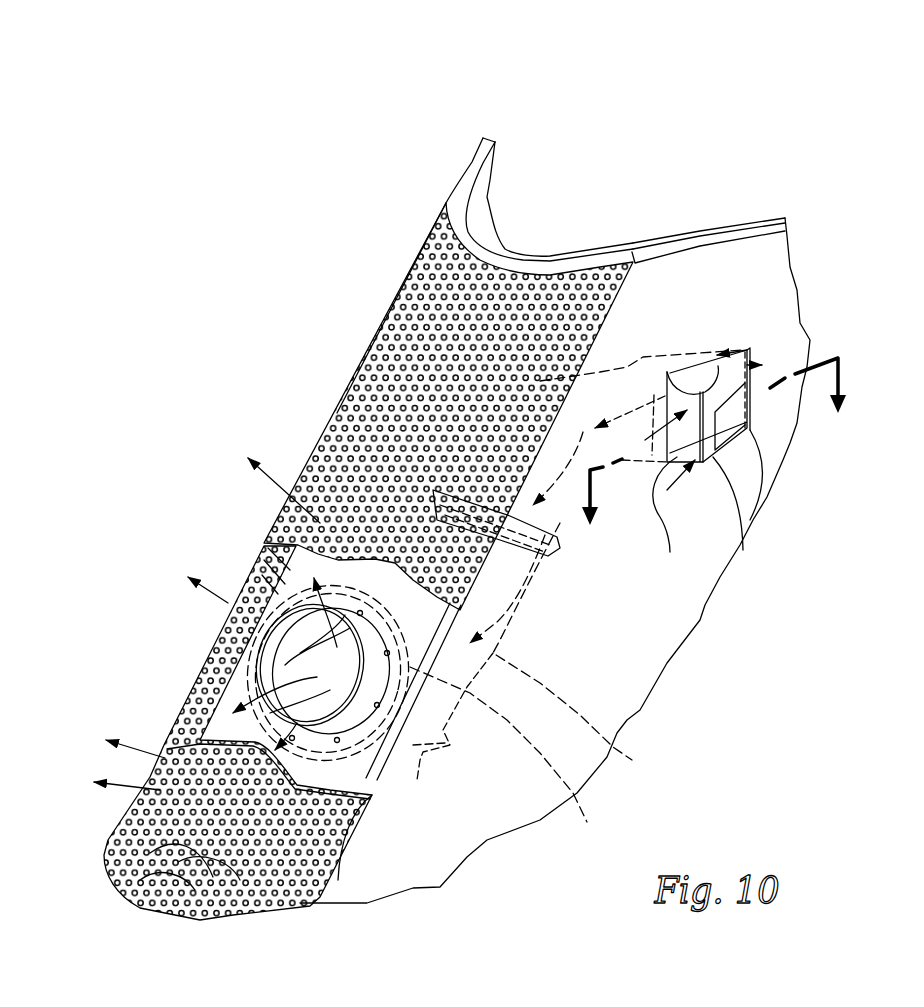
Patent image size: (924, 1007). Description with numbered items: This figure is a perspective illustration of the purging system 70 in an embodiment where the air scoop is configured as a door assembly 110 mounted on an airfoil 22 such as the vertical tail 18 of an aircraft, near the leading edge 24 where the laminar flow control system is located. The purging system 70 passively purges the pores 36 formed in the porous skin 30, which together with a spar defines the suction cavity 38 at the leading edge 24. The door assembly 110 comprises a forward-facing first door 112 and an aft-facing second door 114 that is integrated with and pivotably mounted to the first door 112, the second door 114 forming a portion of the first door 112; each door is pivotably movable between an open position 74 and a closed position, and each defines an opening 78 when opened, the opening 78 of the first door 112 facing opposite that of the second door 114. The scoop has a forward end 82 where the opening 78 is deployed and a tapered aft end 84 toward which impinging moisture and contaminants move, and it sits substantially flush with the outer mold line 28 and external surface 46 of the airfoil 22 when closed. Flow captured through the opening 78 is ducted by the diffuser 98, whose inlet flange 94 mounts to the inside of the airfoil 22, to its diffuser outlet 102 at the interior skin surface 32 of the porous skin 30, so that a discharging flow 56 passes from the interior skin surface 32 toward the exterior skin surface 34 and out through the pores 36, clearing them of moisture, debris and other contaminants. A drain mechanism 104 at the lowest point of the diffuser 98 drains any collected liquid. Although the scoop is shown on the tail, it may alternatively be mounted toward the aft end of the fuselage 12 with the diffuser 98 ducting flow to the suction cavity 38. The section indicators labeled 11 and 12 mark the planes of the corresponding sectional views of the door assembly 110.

The vertical tail 18 is at (392, 298).
The airfoil 22 is at (447, 204).
The leading edge 24 is at (493, 257).
The outer mold line 28 is at (680, 257).
The porous skin 30 is at (571, 269).
The interior skin surface 32 is at (375, 775).
The exterior skin surface 34 is at (345, 793).
The pores 36 is at (400, 318).
The suction cavity 38 is at (260, 573).
The external surface 46 is at (763, 483).
The discharging flow 56 is at (272, 468).
The purging system 70 is at (813, 320).
The open position 74 is at (743, 387).
The opening 78 is at (703, 390).
The forward end 82 is at (748, 430).
The aft end 84 is at (750, 428).
The flange 94 is at (509, 755).
The diffuser 98 is at (565, 608).
The diffuser outlet 102 is at (375, 740).
The drain mechanism 104 is at (417, 780).
The door assembly 110 is at (767, 322).
The first door 112 is at (703, 386).
The second door 114 is at (745, 540).
The section line 11 is at (654, 457).
The fuselage 12 is at (654, 457).